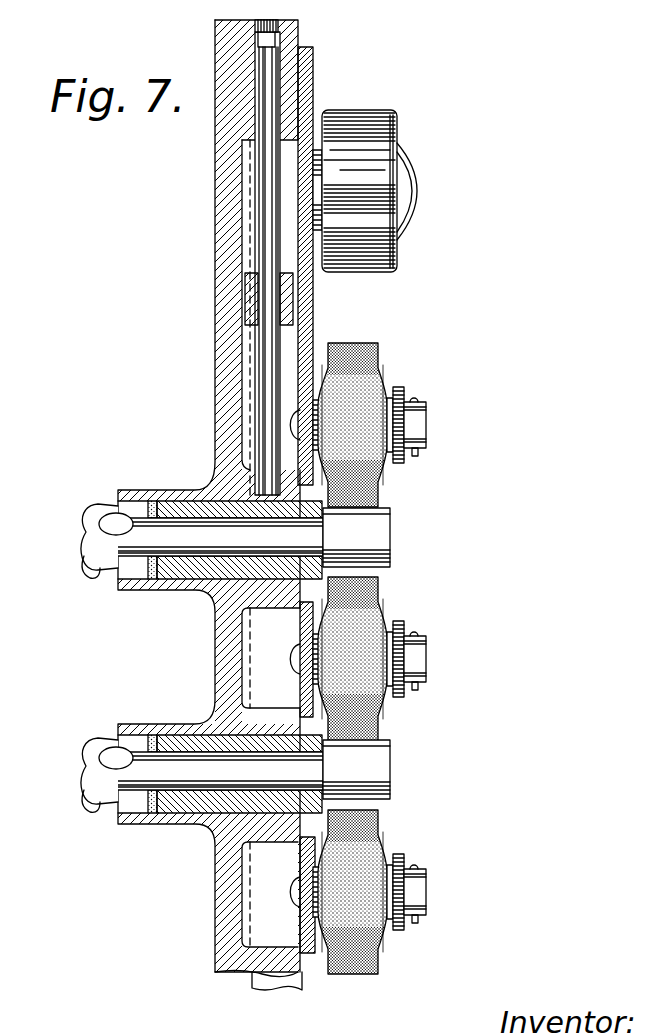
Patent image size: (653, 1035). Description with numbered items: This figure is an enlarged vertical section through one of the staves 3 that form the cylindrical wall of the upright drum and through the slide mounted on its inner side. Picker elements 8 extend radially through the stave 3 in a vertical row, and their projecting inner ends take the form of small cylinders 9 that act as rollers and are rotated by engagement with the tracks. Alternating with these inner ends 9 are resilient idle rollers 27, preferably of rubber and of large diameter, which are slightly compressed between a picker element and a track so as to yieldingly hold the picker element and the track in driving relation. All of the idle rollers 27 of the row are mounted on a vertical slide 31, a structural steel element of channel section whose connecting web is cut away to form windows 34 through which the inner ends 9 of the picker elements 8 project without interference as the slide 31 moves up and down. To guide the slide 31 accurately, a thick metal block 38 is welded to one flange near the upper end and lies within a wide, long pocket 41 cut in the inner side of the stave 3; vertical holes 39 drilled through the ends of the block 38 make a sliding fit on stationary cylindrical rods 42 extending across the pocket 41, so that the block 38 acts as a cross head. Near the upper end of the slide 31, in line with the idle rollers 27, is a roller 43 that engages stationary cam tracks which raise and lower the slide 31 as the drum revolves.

The stave 3 is at (215, 345).
The picker element 8 is at (183, 530).
The inner end of picker element 9 is at (380, 530).
The idle roller 27 is at (378, 352).
The slide 31 is at (313, 82).
The window 34 is at (384, 612).
The block 38 is at (293, 298).
The vertical hole 39 is at (255, 305).
The pocket 41 is at (246, 215).
The guide rod 42 is at (262, 170).
The roller 43 is at (385, 120).